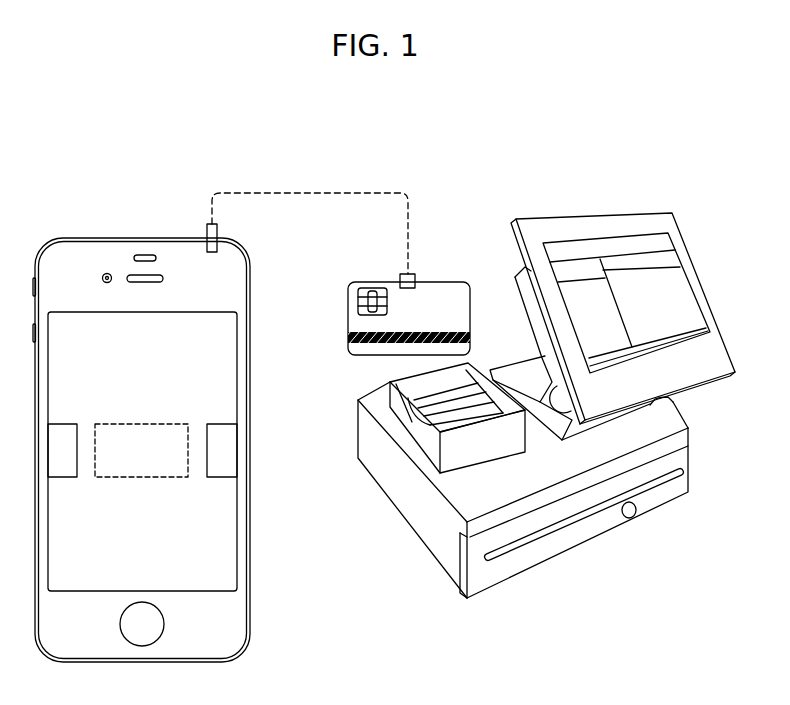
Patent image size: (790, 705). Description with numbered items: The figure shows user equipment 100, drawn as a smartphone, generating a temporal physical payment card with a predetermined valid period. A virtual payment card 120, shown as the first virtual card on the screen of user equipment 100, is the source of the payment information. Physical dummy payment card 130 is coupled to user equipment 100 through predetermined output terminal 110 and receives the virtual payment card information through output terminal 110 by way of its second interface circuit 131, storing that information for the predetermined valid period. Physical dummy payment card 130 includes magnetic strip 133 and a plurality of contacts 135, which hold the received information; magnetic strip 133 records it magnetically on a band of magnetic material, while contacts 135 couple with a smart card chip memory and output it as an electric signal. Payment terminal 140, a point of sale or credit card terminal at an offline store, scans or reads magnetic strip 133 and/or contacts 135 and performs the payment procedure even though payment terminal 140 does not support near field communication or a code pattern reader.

The user equipment 100 is at (250, 578).
The output terminal 110 is at (208, 231).
The first virtual card displayed on screen 120 is at (142, 424).
The physical dummy payment card 130 is at (381, 276).
The second interface circuit 131 is at (402, 276).
The magnetic strip 133 is at (358, 298).
The plurality of contacts 135 is at (348, 337).
The payment terminal 140 is at (427, 443).